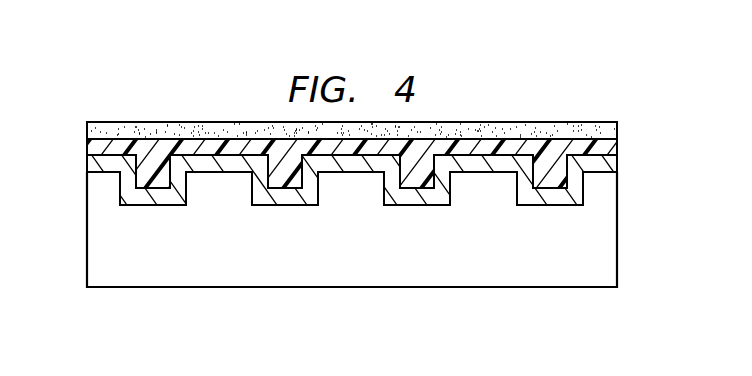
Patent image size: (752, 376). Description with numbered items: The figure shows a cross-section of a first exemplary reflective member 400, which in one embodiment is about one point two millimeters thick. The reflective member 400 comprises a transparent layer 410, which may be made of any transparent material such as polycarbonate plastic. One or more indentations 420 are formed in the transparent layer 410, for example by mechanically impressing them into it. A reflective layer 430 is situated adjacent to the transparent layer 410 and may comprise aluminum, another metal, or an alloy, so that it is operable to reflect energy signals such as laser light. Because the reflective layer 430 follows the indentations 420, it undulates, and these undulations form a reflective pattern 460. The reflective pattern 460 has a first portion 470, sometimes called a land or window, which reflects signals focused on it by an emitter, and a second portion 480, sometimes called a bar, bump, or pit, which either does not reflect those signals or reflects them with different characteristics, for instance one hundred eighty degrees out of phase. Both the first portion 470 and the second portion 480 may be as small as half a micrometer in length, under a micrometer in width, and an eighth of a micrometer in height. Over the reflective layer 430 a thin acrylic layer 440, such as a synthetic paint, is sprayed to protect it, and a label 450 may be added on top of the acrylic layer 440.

The reflective member 400 is at (128, 74).
The transparent layer 410 is at (505, 288).
The indentations 420 is at (265, 206).
The reflective layer 430 is at (147, 206).
The acrylic layer 440 is at (92, 148).
The label 450 is at (567, 125).
The reflective pattern 460 is at (362, 206).
The first portion 470 is at (300, 212).
The second portion 480 is at (492, 182).